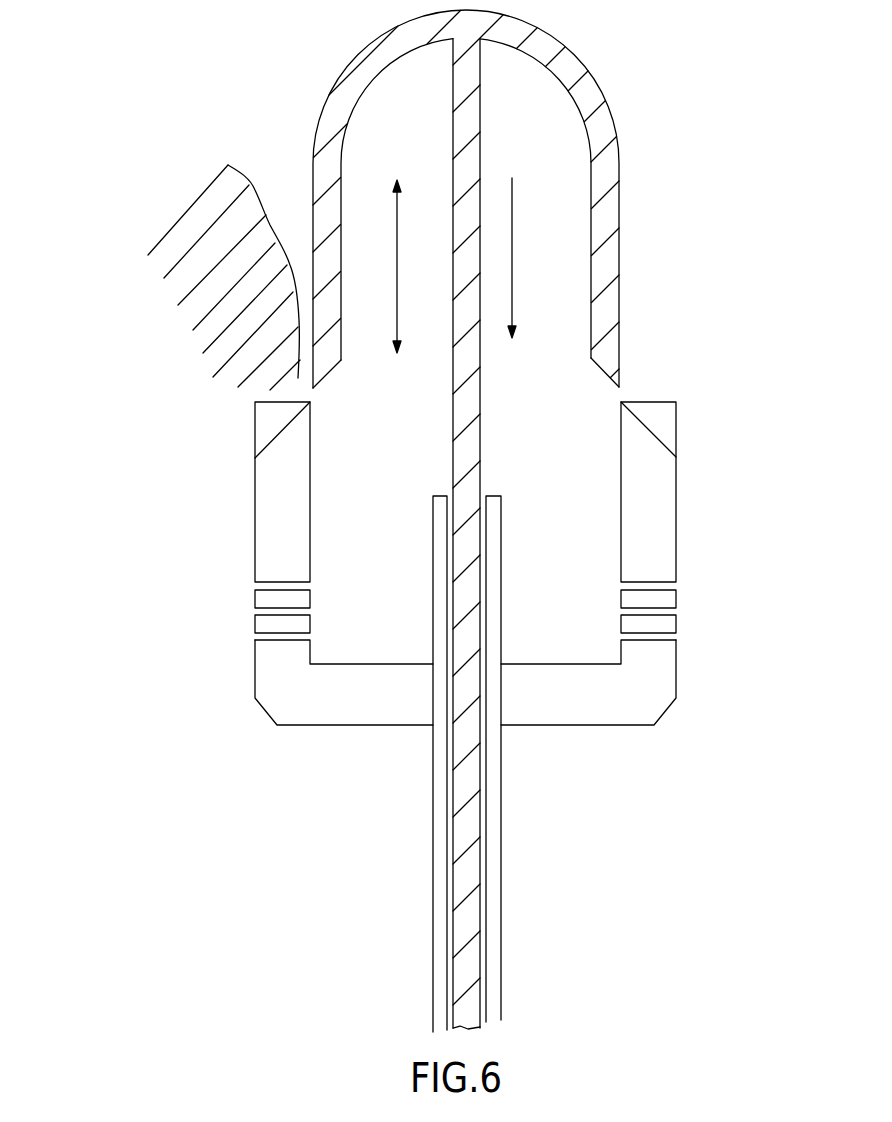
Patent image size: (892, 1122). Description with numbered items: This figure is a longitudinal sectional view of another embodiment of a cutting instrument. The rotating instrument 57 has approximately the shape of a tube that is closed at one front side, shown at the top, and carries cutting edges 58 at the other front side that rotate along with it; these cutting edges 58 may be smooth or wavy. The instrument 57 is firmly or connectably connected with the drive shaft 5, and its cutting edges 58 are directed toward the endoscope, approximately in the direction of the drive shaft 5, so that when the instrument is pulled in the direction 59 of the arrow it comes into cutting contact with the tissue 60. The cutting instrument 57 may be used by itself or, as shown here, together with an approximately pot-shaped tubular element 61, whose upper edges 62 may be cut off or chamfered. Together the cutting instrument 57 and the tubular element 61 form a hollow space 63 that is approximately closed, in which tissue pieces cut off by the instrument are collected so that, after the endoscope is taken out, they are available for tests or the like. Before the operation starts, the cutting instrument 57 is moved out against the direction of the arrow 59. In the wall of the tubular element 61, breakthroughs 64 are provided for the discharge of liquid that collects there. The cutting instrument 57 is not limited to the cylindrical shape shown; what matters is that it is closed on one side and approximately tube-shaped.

The drive shaft 5 is at (472, 826).
The rotating instrument 57 is at (619, 207).
The cutting edges 58 is at (315, 389).
The direction of the arrow 59 is at (513, 215).
The tissue 60 is at (210, 358).
The tubular element 61 is at (676, 516).
The cut-off or chamfered upper edges 62 is at (280, 433).
The hollow space 63 is at (391, 134).
The breakthroughs 64 is at (255, 588).